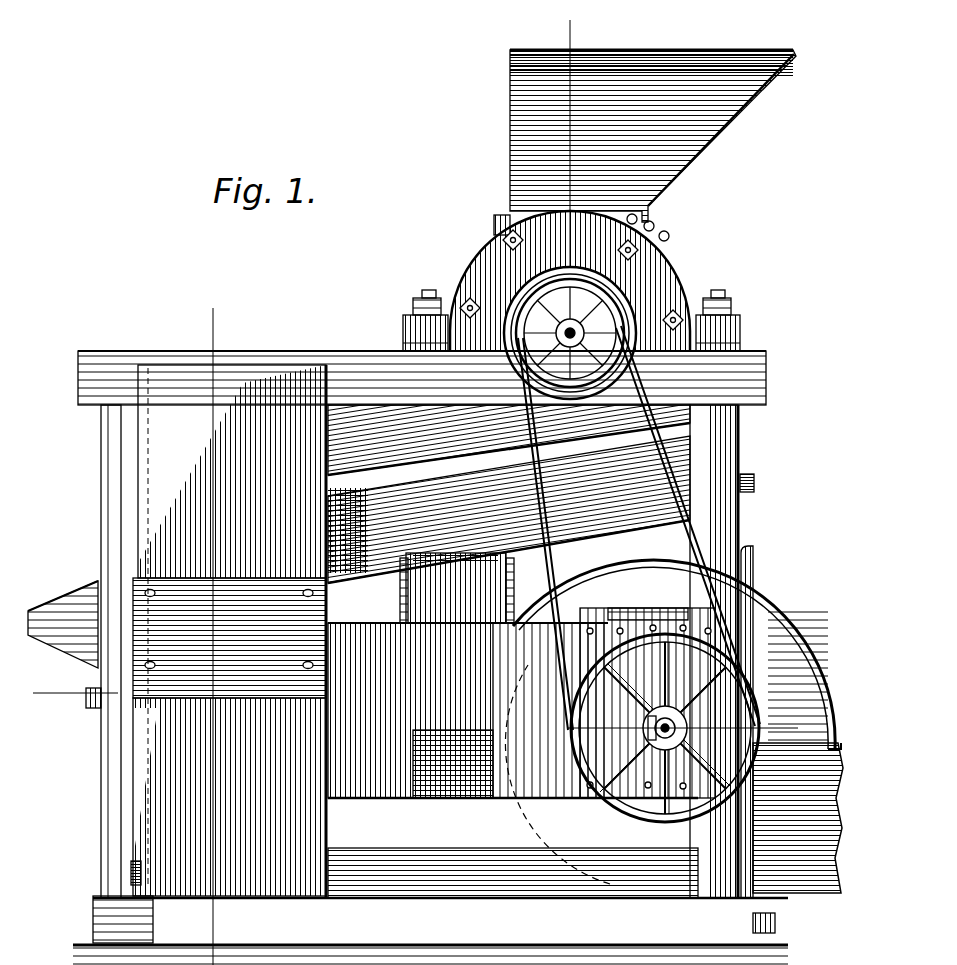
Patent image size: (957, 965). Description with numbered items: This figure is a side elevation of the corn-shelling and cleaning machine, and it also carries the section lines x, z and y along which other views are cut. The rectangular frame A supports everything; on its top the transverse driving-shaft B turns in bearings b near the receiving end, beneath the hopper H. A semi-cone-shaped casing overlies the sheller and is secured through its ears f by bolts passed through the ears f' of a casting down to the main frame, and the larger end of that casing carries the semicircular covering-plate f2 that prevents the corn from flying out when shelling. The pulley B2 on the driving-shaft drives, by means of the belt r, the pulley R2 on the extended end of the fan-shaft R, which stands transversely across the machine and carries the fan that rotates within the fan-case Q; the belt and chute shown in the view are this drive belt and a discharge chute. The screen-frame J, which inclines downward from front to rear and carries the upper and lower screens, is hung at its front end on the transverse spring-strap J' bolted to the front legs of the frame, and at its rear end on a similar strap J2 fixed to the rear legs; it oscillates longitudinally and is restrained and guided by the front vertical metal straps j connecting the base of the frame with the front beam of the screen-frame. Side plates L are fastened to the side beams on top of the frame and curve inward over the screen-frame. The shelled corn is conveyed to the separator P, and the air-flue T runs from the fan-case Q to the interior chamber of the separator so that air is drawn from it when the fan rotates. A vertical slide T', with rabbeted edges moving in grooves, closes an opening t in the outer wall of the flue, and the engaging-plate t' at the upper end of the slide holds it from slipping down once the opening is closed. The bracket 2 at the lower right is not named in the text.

The section line x x is at (578, 175).
The hopper H is at (502, 163).
The driving-shaft B is at (528, 312).
The bearing b is at (545, 298).
The semicircular covering-plate f2 is at (550, 272).
The pulley B2 is at (588, 368).
The ears f is at (568, 320).
The ears f' is at (571, 339).
The frame A is at (748, 436).
The section line z z is at (210, 629).
The separator P is at (229, 631).
The side plates L is at (509, 440).
The screen-frame J is at (509, 509).
The spring-strap J' is at (758, 472).
The strap J2 is at (85, 705).
The section line y y is at (417, 700).
The engaging-plate t' is at (457, 579).
The vertical slide T' is at (468, 710).
The air-flue T is at (468, 696).
The opening t is at (453, 781).
The fan-case Q is at (818, 640).
The belt r is at (575, 592).
The fan-shaft R is at (640, 726).
The pulley R2 is at (686, 736).
The vertical metal straps j is at (748, 558).
The bracket 2 is at (798, 818).
The drive belt is at (639, 528).
The discharge chute is at (63, 624).